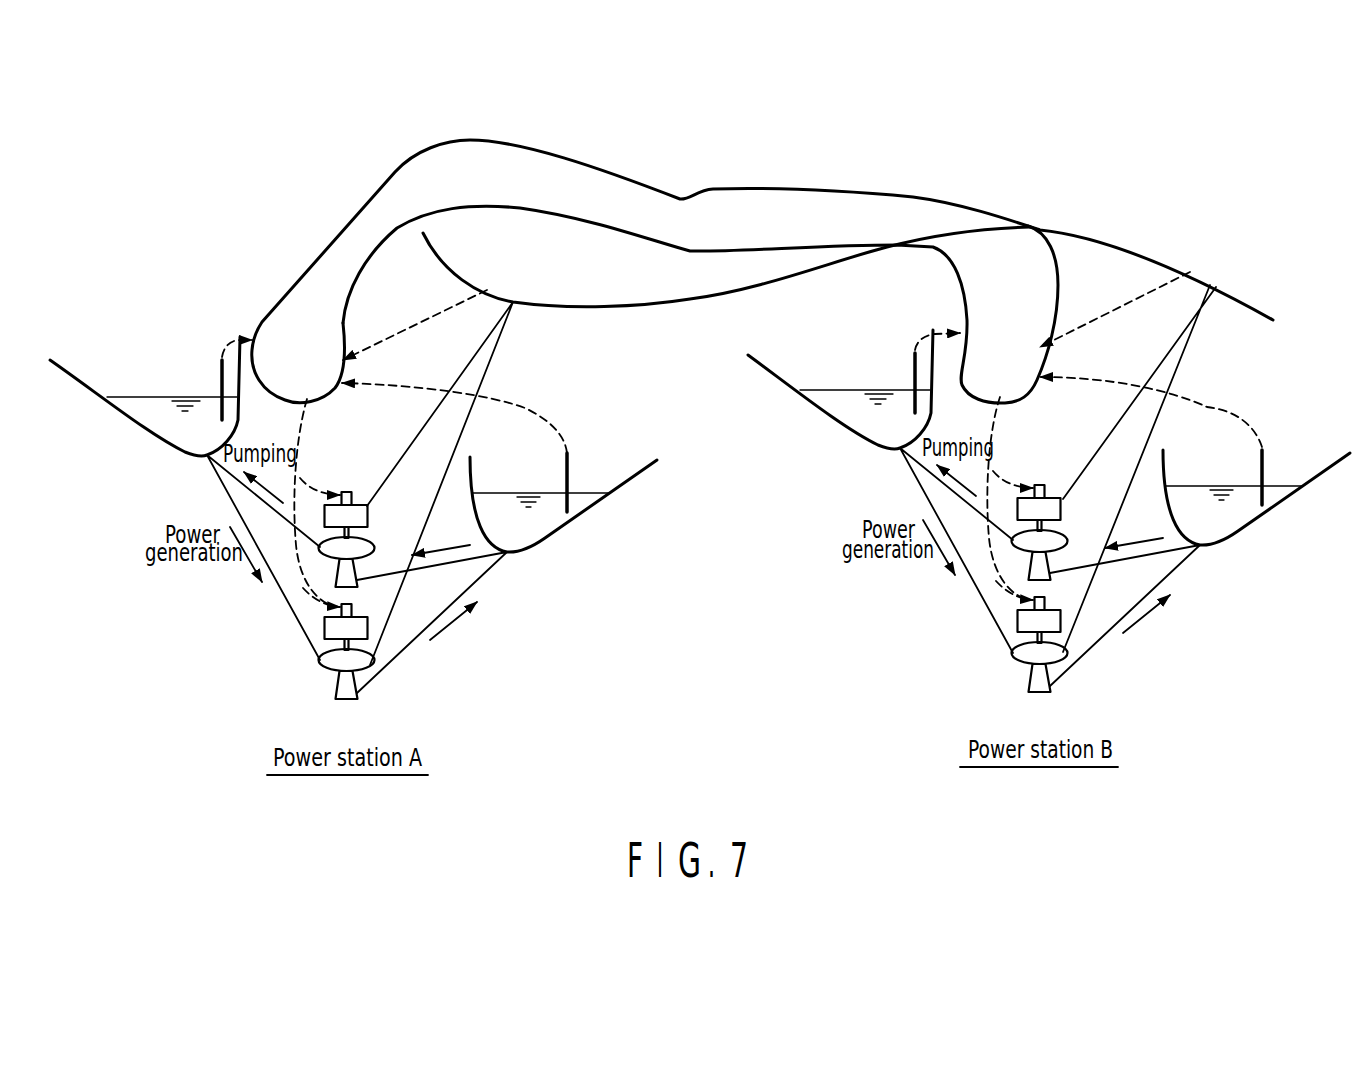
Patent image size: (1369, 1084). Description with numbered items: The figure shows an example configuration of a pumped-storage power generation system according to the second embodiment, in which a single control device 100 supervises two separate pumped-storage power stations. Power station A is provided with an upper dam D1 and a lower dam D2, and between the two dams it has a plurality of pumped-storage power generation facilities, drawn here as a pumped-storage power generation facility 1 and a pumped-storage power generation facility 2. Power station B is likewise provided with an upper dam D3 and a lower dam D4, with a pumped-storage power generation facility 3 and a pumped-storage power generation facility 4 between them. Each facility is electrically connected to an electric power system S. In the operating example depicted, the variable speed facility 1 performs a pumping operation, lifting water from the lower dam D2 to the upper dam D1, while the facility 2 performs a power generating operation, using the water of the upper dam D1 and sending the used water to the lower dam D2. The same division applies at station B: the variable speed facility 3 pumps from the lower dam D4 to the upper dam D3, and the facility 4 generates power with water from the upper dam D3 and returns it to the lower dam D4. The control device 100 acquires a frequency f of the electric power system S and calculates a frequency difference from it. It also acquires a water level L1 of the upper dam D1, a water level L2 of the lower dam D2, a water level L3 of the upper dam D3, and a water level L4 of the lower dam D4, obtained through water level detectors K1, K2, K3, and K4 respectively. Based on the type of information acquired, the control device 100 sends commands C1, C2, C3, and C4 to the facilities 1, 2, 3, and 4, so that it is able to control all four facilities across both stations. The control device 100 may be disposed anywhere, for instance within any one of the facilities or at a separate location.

The control device 100 is at (737, 186).
The electric power system S is at (677, 300).
The frequency f is at (766, 316).
The water level L1 is at (232, 335).
The water level L2 is at (454, 405).
The water level L3 is at (933, 330).
The water level L4 is at (1151, 398).
The water level detector K1 is at (222, 375).
The water level detector K2 is at (570, 472).
The water level detector K3 is at (891, 379).
The water level detector K4 is at (1286, 475).
The upper dam D1 is at (141, 427).
The lower dam D2 is at (577, 513).
The upper dam D3 is at (840, 397).
The lower dam D4 is at (1256, 504).
The command C1 is at (320, 475).
The command C2 is at (321, 584).
The command C3 is at (1013, 468).
The command C4 is at (1014, 575).
The pumped-storage power generation facility 1 is at (366, 504).
The pumped-storage power generation facility 2 is at (337, 688).
The pumped-storage power generation facility 3 is at (1040, 513).
The pumped-storage power generation facility 4 is at (1034, 650).